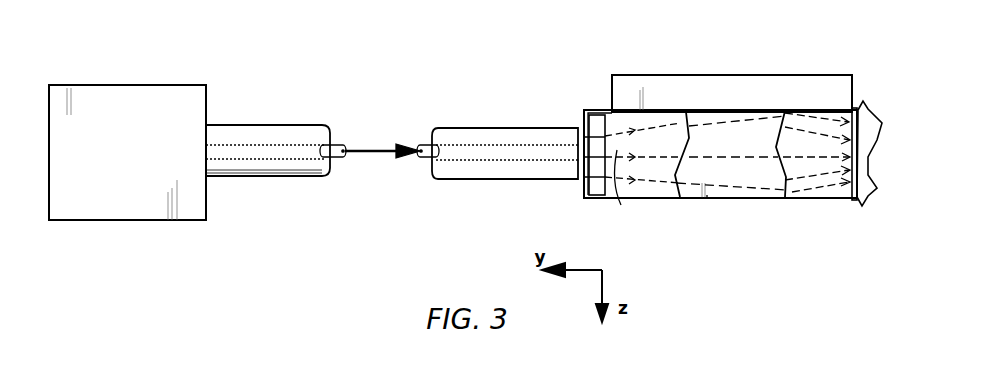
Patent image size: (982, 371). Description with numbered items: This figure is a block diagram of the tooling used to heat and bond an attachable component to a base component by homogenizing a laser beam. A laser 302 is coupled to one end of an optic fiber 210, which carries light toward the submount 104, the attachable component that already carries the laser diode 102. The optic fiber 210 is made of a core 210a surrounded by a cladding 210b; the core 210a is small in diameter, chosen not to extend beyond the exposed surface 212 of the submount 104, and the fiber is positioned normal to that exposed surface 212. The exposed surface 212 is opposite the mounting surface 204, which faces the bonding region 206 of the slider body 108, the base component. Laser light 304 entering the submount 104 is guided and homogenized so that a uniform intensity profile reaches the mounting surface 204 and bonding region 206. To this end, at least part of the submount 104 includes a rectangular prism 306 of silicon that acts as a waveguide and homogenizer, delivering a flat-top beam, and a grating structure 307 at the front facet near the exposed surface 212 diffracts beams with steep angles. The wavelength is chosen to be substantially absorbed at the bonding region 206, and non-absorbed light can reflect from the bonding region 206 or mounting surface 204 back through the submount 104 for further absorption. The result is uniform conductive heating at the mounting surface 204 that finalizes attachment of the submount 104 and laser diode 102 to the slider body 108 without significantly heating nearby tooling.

The laser 302 is at (108, 88).
The optic fiber 210 is at (530, 170).
The core 210a is at (422, 144).
The cladding 210b is at (336, 169).
The exposed surface 212 is at (585, 114).
The laser diode 102 is at (720, 78).
The submount 104 is at (745, 199).
The grating structure 307 is at (594, 188).
The laser light 304 is at (621, 204).
The rectangular prism 306 is at (672, 183).
The mounting surface 204 is at (849, 192).
The bonding region 206 is at (857, 112).
The slider body 108 is at (868, 193).